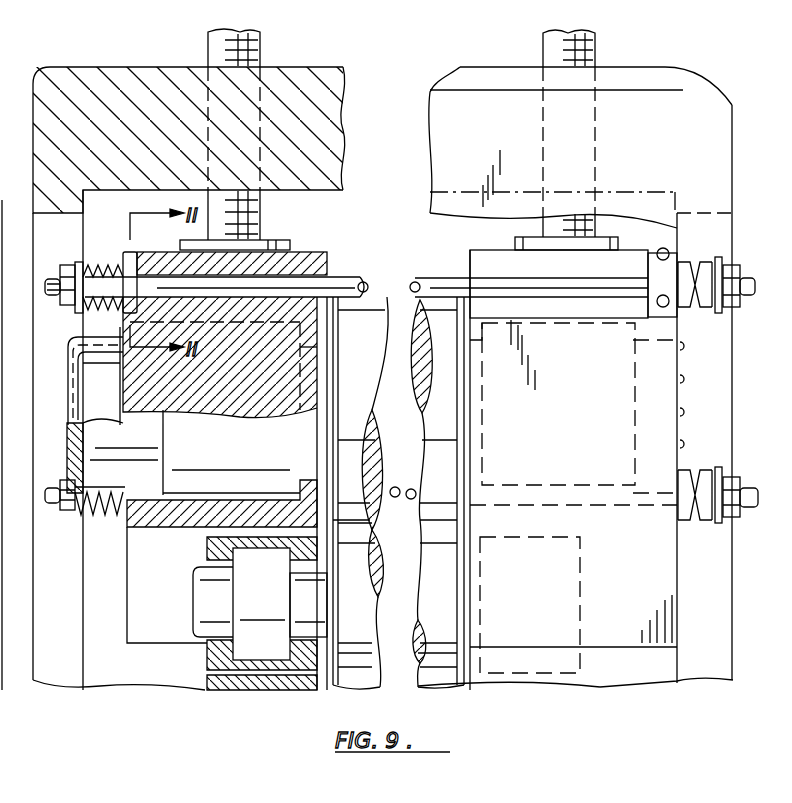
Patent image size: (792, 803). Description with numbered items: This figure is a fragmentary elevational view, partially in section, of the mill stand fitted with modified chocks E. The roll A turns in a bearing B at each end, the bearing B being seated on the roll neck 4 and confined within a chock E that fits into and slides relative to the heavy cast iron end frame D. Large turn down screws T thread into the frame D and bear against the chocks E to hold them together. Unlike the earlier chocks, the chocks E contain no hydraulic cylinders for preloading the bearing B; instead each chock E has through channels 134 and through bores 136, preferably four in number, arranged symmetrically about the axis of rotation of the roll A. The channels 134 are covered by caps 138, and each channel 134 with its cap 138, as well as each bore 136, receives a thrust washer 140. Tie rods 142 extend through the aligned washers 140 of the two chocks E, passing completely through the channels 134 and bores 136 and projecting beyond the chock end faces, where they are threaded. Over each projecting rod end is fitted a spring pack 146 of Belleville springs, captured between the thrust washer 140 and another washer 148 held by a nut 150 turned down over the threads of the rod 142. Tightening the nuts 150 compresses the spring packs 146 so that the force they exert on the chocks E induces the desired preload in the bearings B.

The roll neck 4 is at (305, 447).
The through channel 134 is at (298, 275).
The through bore 136 is at (612, 508).
The cap 138 is at (657, 252).
The thrust washer 140 is at (133, 258).
The tie rod 142 is at (50, 296).
The spring pack 146 is at (100, 262).
The washer 148 is at (80, 263).
The nut 150 is at (68, 263).
The turn down screw T is at (206, 46).
The end frame D is at (303, 67).
The modified chock E is at (325, 243).
The roll A is at (348, 306).
The bearing B is at (188, 479).